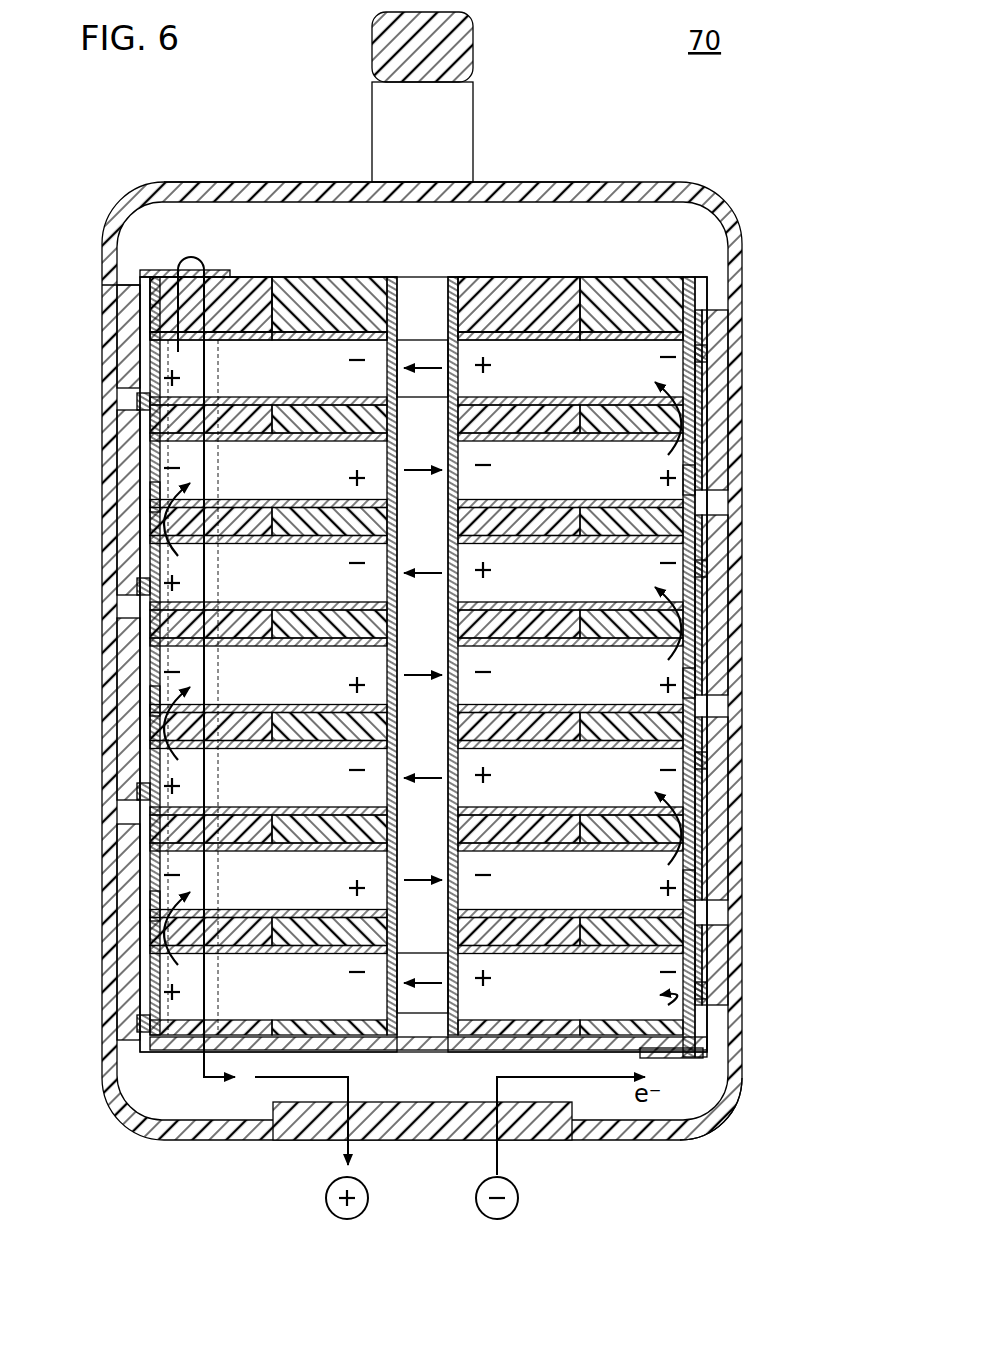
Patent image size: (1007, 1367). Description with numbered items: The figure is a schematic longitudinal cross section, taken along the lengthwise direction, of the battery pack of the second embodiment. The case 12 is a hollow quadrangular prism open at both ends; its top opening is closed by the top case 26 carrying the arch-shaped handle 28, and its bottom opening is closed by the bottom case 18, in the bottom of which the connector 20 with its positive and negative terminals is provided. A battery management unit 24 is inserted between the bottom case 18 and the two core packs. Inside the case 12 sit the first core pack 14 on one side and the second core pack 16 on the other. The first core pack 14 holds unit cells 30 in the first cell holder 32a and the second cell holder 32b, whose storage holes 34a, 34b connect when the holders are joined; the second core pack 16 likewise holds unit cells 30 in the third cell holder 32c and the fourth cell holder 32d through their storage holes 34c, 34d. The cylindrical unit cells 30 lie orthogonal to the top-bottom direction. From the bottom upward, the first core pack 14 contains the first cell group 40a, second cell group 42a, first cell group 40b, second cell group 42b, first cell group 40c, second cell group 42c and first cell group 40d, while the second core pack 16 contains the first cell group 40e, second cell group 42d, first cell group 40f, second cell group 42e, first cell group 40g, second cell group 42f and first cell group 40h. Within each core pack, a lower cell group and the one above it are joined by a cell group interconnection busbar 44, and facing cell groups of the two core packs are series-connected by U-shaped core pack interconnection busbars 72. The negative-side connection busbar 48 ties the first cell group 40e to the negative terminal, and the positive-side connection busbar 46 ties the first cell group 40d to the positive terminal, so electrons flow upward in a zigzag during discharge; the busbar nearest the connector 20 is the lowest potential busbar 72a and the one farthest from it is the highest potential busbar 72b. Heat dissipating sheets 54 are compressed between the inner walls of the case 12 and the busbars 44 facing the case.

The case 12 is at (742, 296).
The first core pack 14 is at (312, 226).
The second core pack 16 is at (685, 268).
The bottom case 18 is at (735, 1095).
The connector 20 is at (408, 1130).
The battery management unit 24 is at (388, 1050).
The top case 26 is at (530, 186).
The handle 28 is at (468, 42).
The unit cell 30 is at (152, 345).
The first cell holder 32a is at (236, 290).
The second cell holder 32b is at (358, 290).
The third cell holder 32c is at (520, 290).
The fourth cell holder 32d is at (652, 290).
The storage hole 34a is at (245, 342).
The storage hole 34b is at (310, 345).
The storage hole 34c is at (488, 345).
The storage hole 34d is at (615, 345).
The first cell group 40a is at (137, 1023).
The first cell group 40b is at (137, 790).
The first cell group 40c is at (137, 586).
The first cell group 40d is at (137, 402).
The first cell group 40e is at (707, 990).
The first cell group 40f is at (707, 762).
The first cell group 40g is at (707, 570).
The first cell group 40h is at (707, 354).
The second cell group 42a is at (150, 895).
The second cell group 42b is at (150, 700).
The second cell group 42c is at (150, 495).
The second cell group 42d is at (695, 882).
The second cell group 42e is at (695, 680).
The second cell group 42f is at (695, 480).
The cell group interconnection busbar 44 is at (150, 480).
The positive-side connection busbar 46 is at (220, 473).
The negative-side connection busbar 48 is at (706, 1053).
The heat dissipating sheet 54 is at (118, 378).
The core pack interconnection busbar 72 is at (398, 445).
The lowest potential busbar 72a is at (400, 960).
The highest potential busbar 72b is at (400, 336).